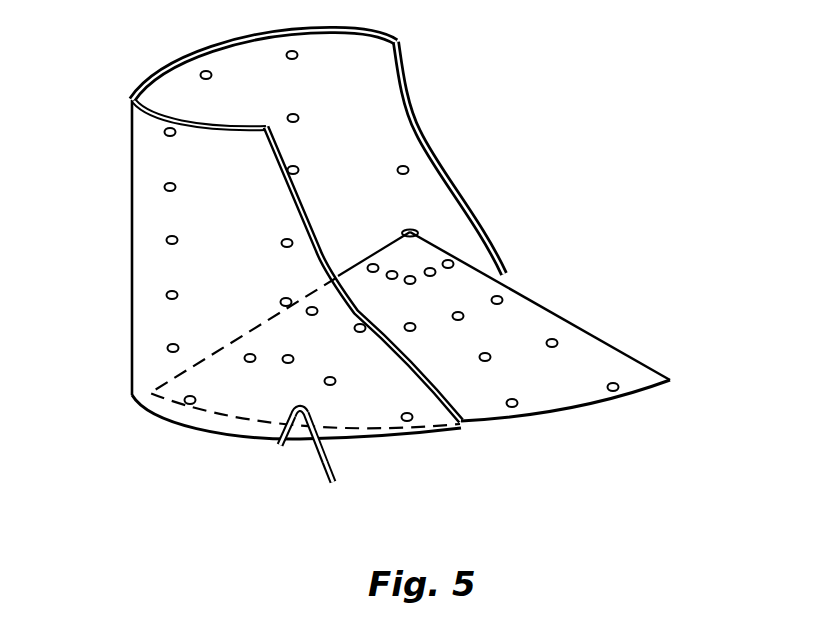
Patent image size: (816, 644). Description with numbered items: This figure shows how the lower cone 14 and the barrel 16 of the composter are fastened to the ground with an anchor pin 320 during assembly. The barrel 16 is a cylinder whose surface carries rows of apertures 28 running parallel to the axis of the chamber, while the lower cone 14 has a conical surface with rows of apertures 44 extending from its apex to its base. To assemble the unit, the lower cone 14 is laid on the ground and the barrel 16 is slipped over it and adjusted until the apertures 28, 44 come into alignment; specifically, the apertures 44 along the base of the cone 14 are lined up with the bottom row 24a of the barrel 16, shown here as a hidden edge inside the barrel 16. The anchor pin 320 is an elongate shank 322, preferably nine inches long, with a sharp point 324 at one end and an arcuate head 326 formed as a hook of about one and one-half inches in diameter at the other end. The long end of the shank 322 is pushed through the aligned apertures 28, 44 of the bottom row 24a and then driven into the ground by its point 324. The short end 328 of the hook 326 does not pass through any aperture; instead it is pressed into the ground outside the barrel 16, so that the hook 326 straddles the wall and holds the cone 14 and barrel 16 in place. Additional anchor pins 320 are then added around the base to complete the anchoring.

The barrel 16 is at (131, 208).
The apertures 28 is at (178, 290).
The lower cone 14 is at (571, 410).
The apertures 44 is at (512, 398).
The bottom row 24a is at (222, 394).
The anchor pin 320 is at (317, 450).
The elongate shank 322 is at (318, 447).
The sharp point 324 is at (333, 484).
The arcuate head 326 is at (297, 408).
The short end 328 is at (277, 446).